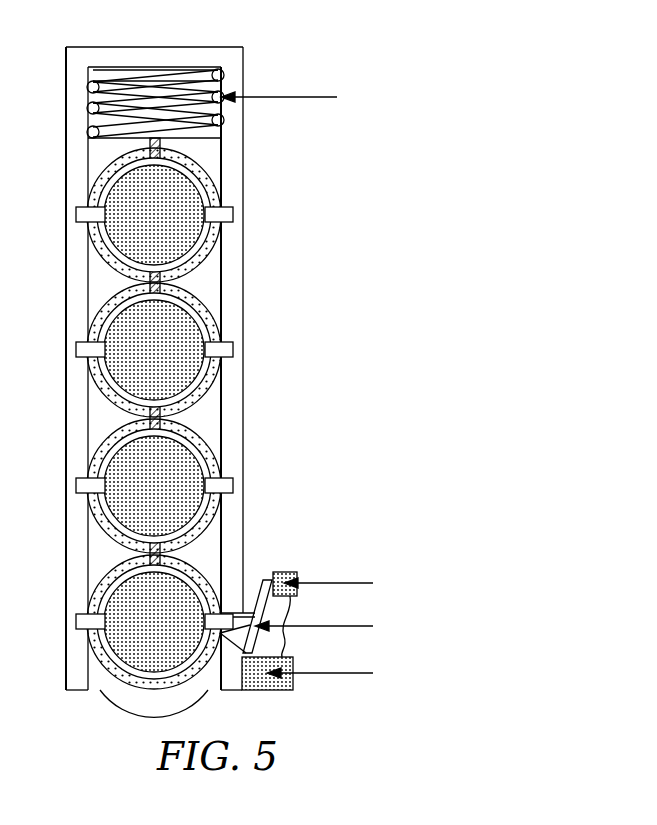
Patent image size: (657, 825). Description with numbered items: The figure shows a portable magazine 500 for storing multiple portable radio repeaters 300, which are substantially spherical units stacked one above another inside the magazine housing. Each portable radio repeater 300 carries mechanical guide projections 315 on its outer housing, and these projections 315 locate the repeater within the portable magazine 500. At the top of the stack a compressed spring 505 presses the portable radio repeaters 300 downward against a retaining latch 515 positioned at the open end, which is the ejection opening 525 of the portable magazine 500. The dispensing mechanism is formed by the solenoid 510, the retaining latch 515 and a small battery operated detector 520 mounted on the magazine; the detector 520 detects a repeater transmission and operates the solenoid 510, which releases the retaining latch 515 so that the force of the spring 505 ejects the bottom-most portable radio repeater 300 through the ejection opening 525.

The portable magazine 500 is at (443, 47).
The spring 505 is at (221, 73).
The portable radio repeater 300 is at (204, 247).
The mechanical guide projections 315 is at (76, 213).
The solenoid 510 is at (284, 572).
The retaining latch 515 is at (238, 652).
The battery operated detector 520 is at (275, 690).
The ejection opening 525 is at (120, 686).